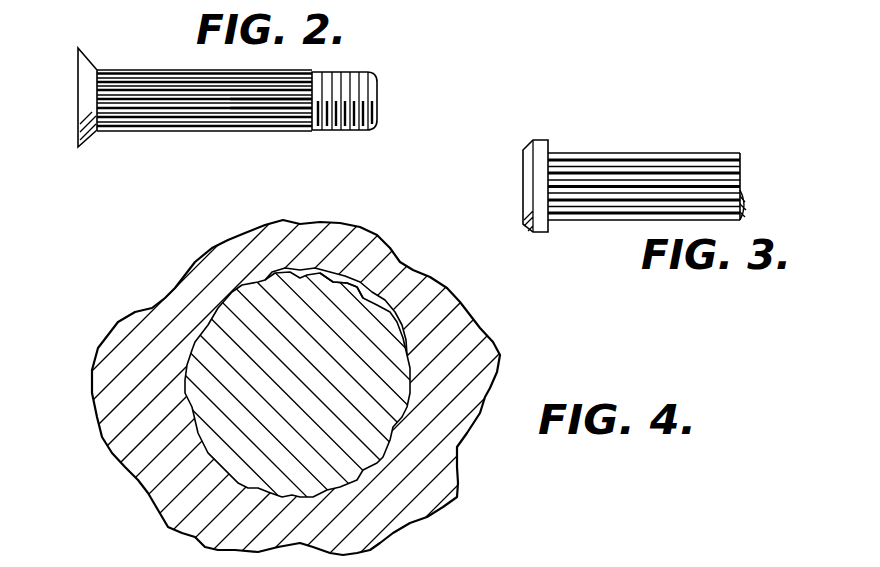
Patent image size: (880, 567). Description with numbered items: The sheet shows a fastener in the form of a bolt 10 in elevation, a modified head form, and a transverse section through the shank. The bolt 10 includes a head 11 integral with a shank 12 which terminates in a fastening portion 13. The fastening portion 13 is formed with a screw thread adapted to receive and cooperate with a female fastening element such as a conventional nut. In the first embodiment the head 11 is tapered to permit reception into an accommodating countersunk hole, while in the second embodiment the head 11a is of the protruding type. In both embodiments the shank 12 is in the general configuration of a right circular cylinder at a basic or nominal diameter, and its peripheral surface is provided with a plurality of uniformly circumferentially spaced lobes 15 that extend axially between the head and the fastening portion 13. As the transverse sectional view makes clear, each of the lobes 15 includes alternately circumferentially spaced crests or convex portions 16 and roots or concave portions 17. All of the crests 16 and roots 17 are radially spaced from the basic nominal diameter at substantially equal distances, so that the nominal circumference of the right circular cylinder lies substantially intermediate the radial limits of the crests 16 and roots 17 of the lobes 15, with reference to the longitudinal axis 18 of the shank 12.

In FIG. 2, the bolt 10 is at (210, 106).
In FIG. 3, the bolt 10 is at (611, 186).
In FIG. 2, the head 11 is at (78, 97).
In FIG. 3, the head 11a is at (523, 179).
In FIG. 2, the shank 12 is at (183, 70).
In FIG. 3, the shank 12 is at (633, 153).
In FIG. 4, the shank 12 is at (387, 428).
In FIG. 2, the fastening portion 13 is at (344, 72).
In FIG. 2, the lobes 15 is at (272, 110).
In FIG. 4, the lobes 15 is at (398, 316).
In FIG. 4, the crests 16 is at (283, 268).
In FIG. 4, the roots 17 is at (263, 283).
In FIG. 4, the longitudinal axis 18 is at (312, 396).